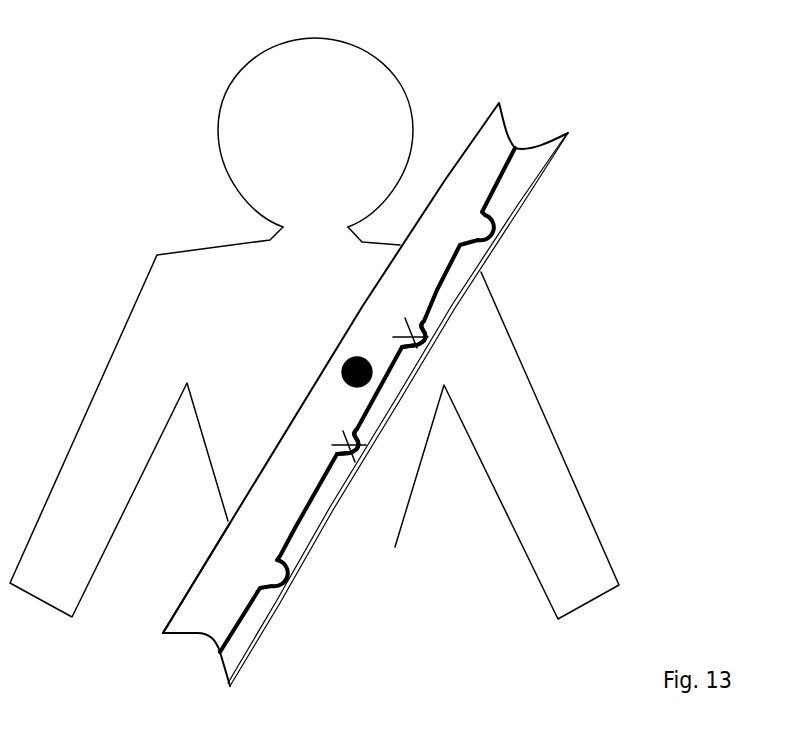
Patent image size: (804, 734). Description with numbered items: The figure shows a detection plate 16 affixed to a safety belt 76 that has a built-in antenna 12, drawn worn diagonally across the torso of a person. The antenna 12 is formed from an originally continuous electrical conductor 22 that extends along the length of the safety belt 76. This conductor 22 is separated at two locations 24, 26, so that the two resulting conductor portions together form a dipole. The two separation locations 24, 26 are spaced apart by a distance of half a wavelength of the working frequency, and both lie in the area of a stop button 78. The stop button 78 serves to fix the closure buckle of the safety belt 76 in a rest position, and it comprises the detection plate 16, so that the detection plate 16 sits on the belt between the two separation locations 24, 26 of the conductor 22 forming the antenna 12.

The antenna 12 is at (383, 413).
The detection plate 16 is at (306, 341).
The electrical conductor 22 is at (523, 170).
The separation location 24 is at (366, 462).
The separation location 26 is at (435, 349).
The safety belt 76 is at (205, 595).
The stop button 78 is at (330, 375).